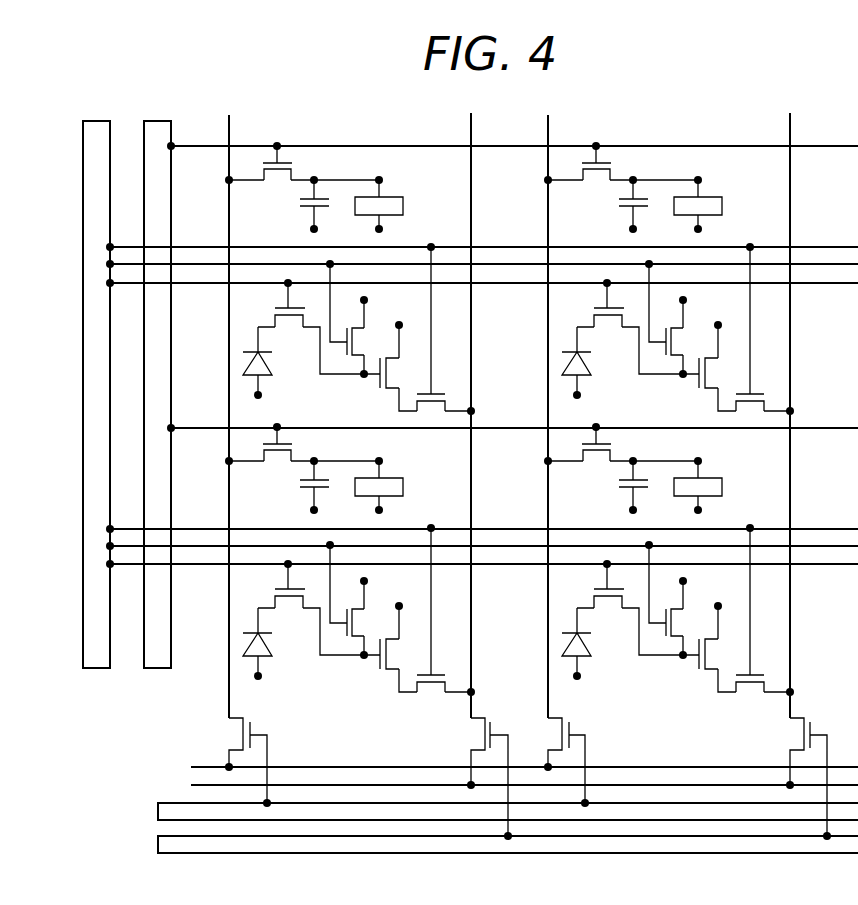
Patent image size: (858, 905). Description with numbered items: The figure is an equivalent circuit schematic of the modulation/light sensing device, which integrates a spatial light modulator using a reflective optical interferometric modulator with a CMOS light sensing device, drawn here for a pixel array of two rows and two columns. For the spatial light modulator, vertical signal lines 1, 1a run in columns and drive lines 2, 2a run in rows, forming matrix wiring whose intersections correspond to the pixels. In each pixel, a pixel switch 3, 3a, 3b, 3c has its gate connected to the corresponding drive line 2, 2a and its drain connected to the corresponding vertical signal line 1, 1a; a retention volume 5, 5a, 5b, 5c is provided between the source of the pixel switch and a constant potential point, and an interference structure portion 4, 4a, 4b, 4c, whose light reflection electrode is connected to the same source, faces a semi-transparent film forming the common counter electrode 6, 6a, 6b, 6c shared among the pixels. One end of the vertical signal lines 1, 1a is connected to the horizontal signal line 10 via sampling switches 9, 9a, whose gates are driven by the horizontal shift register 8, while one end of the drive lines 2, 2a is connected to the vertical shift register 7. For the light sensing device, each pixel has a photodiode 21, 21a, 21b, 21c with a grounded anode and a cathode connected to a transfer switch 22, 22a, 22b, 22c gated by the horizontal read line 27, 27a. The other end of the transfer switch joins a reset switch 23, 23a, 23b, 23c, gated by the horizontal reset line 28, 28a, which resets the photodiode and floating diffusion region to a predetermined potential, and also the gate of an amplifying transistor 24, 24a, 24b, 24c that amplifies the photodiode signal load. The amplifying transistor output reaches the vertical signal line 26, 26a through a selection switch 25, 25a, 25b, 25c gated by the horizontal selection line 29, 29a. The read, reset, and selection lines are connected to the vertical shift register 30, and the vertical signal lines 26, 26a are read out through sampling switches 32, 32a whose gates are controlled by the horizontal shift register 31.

The vertical signal line 1 is at (229, 128).
The vertical signal line 1a is at (548, 128).
The drive line 2 is at (512, 134).
The drive line 2a is at (512, 417).
The pixel switch 3 is at (302, 170).
The pixel switch 3a is at (621, 170).
The pixel switch 3b is at (302, 452).
The pixel switch 3c is at (621, 453).
The interference structure portion 4 is at (389, 196).
The interference structure portion 4a is at (714, 196).
The interference structure portion 4b is at (395, 477).
The interference structure portion 4c is at (714, 478).
The retention volume 5 is at (318, 204).
The retention volume 5a is at (623, 204).
The retention volume 5b is at (324, 485).
The retention volume 5c is at (623, 485).
The common counter electrode 6 is at (388, 229).
The common counter electrode 6a is at (713, 229).
The common counter electrode 6b is at (394, 510).
The common counter electrode 6c is at (713, 510).
The vertical shift register 7 is at (157, 668).
The horizontal shift register 8 is at (158, 811).
The sampling switch 9 is at (246, 762).
The sampling switch 9a is at (560, 762).
The horizontal signal line 10 is at (524, 761).
The photodiode 21 is at (274, 363).
The photodiode 21a is at (596, 363).
The photodiode 21b is at (279, 644).
The photodiode 21c is at (595, 644).
The transfer switch 22 is at (319, 328).
The transfer switch 22a is at (626, 328).
The transfer switch 22b is at (309, 609).
The transfer switch 22c is at (626, 609).
The reset switch 23 is at (356, 317).
The reset switch 23a is at (676, 340).
The reset switch 23b is at (360, 626).
The reset switch 23c is at (678, 626).
The amplifying transistor 24 is at (398, 366).
The amplifying transistor 24a is at (706, 369).
The amplifying transistor 24b is at (388, 652).
The amplifying transistor 24c is at (706, 650).
The selection switch 25 is at (446, 329).
The selection switch 25a is at (765, 329).
The selection switch 25b is at (446, 623).
The selection switch 25c is at (765, 622).
The vertical signal line 26 is at (471, 134).
The vertical signal line 26a is at (790, 134).
The horizontal read line 27 is at (482, 293).
The horizontal read line 27a is at (482, 577).
The horizontal reset line 28 is at (208, 264).
The horizontal reset line 28a is at (260, 546).
The horizontal selection line 29 is at (482, 237).
The horizontal selection line 29a is at (482, 519).
The vertical shift register 30 is at (96, 668).
The horizontal shift register 31 is at (158, 845).
The sampling switch 32 is at (483, 779).
The sampling switch 32a is at (796, 779).